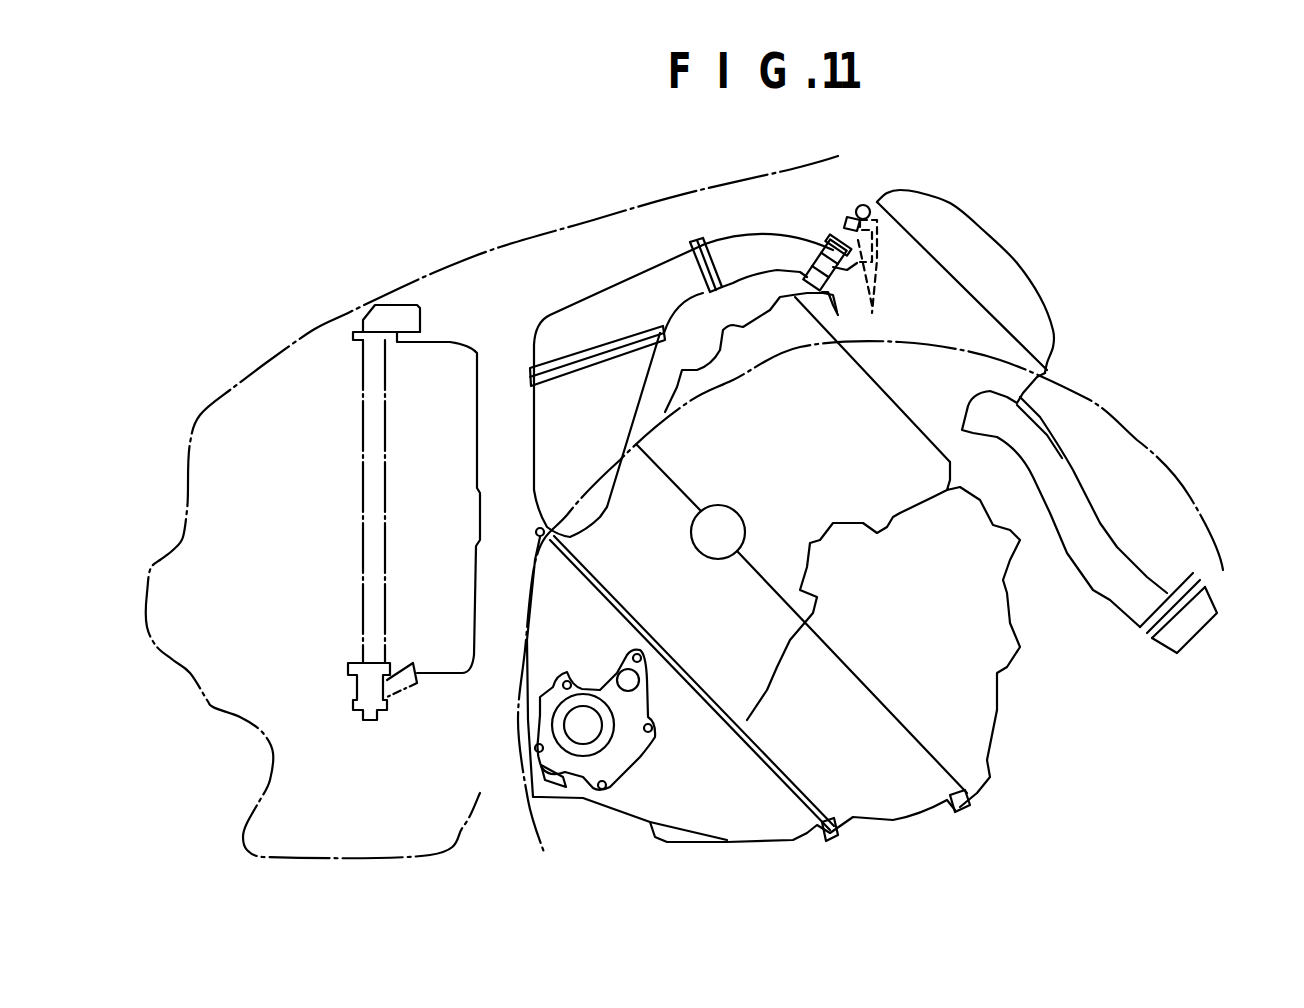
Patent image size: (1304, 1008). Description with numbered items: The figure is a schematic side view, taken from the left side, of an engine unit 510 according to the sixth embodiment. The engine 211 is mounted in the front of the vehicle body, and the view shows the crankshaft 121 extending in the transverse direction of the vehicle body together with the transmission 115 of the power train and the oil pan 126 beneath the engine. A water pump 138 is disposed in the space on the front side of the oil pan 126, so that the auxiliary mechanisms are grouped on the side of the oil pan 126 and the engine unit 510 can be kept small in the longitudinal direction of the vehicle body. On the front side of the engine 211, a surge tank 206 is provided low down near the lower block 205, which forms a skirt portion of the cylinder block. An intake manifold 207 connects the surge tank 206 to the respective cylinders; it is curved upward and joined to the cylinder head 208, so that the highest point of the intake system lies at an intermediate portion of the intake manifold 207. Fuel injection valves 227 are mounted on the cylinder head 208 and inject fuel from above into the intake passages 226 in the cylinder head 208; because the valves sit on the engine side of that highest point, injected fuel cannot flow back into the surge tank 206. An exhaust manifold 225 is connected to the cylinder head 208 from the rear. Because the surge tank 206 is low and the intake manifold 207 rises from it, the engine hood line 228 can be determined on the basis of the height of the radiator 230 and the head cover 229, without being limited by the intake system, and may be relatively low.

The radiator 230 is at (363, 367).
The engine hood line 228 is at (595, 212).
The lower block 205 is at (617, 520).
The surge tank 206 is at (573, 380).
The engine unit 510 is at (620, 143).
The engine 211 is at (730, 223).
The intake manifold 207 is at (763, 232).
The intake passages 226 is at (842, 315).
The fuel injection valves 227 is at (867, 203).
The cylinder head 208 is at (893, 240).
The head cover 229 is at (953, 230).
The exhaust manifold 225 is at (1123, 517).
The crankshaft 121 is at (745, 537).
The transmission 115 is at (960, 680).
The oil pan 126 is at (750, 828).
The water pump 138 is at (590, 777).